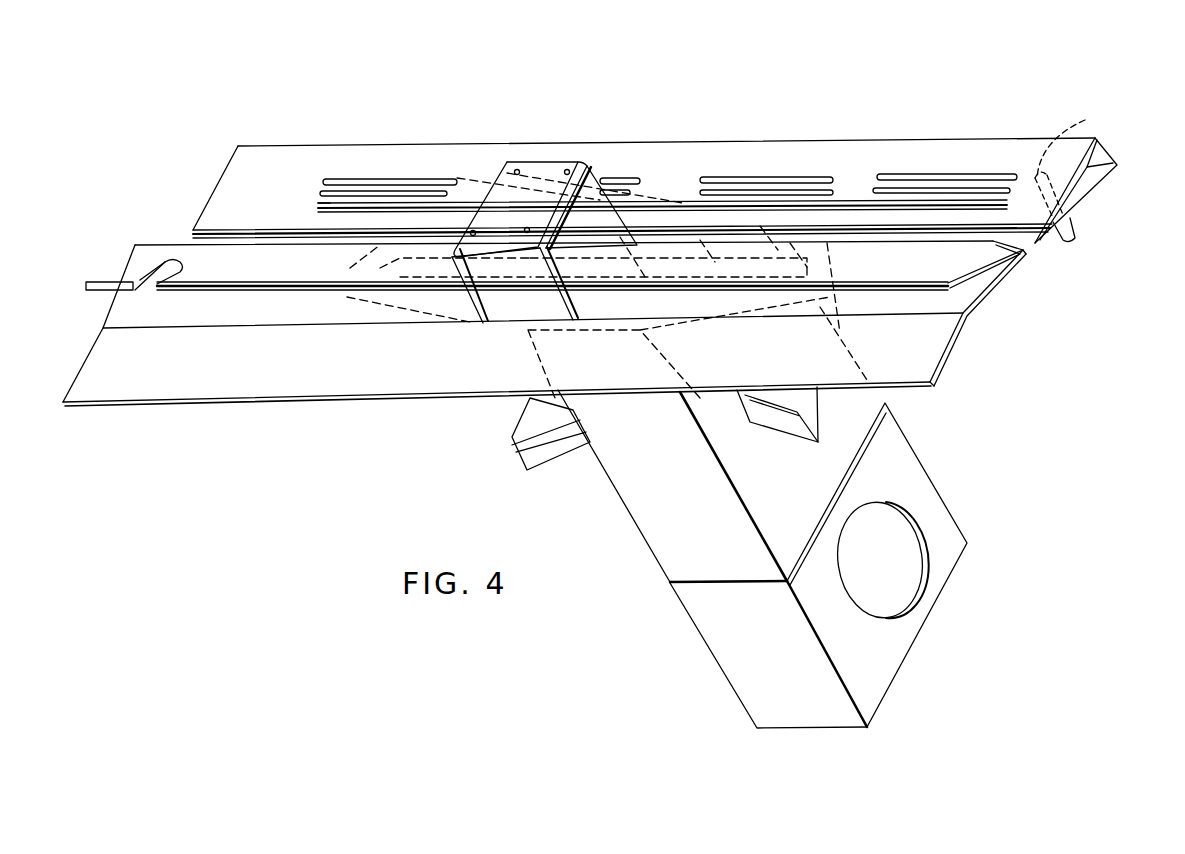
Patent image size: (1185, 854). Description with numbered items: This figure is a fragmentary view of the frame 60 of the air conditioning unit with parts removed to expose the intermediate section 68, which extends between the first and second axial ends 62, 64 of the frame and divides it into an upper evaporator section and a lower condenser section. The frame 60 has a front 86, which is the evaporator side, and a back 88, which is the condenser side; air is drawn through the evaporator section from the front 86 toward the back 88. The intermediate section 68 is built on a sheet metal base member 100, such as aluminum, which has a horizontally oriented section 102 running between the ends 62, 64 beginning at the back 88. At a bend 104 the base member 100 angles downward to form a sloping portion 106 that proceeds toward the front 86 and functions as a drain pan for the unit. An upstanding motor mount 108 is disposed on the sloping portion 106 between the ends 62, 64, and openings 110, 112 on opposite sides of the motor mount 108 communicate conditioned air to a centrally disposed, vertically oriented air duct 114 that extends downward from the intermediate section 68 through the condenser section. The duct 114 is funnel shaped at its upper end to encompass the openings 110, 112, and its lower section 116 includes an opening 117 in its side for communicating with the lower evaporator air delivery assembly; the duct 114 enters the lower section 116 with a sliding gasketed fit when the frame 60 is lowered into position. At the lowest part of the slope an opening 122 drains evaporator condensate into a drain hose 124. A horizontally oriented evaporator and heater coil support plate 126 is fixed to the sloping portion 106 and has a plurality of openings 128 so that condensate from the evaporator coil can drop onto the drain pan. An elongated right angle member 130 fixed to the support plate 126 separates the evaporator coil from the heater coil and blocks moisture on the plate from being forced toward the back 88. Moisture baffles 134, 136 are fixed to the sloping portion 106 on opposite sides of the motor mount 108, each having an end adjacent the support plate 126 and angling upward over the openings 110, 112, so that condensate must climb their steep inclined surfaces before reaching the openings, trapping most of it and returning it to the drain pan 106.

The frame 60 is at (1100, 313).
The first axial end 62 is at (1087, 242).
The second axial end 64 is at (88, 338).
The intermediate section 68 is at (966, 139).
The front 86 is at (712, 104).
The back 88 is at (390, 432).
The base member 100 is at (975, 315).
The horizontally oriented section 102 is at (945, 353).
The bend 104 is at (888, 315).
The sloping portion 106 is at (1013, 265).
The motor mount 108 is at (533, 167).
The opening 110 is at (397, 277).
The opening 112 is at (830, 272).
The air duct 114 is at (627, 505).
The lower section of duct 116 is at (945, 535).
The opening 117 is at (879, 506).
The opening 122 is at (1085, 120).
The drain hose 124 is at (1068, 224).
The evaporator and heater coil support plate 126 is at (1103, 145).
The openings 128 is at (703, 177).
The elongated right angle member 130 is at (320, 214).
The moisture baffle 134 is at (125, 257).
The moisture baffle 136 is at (1005, 267).